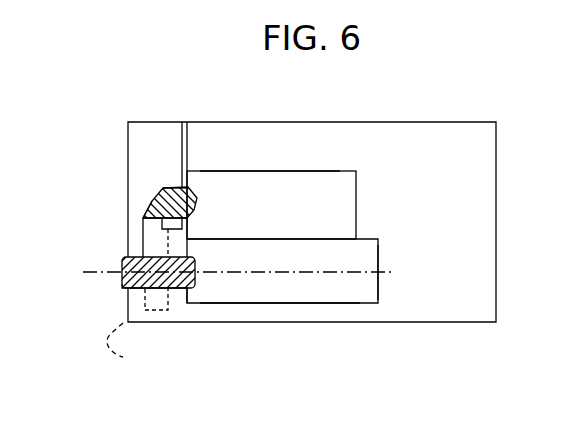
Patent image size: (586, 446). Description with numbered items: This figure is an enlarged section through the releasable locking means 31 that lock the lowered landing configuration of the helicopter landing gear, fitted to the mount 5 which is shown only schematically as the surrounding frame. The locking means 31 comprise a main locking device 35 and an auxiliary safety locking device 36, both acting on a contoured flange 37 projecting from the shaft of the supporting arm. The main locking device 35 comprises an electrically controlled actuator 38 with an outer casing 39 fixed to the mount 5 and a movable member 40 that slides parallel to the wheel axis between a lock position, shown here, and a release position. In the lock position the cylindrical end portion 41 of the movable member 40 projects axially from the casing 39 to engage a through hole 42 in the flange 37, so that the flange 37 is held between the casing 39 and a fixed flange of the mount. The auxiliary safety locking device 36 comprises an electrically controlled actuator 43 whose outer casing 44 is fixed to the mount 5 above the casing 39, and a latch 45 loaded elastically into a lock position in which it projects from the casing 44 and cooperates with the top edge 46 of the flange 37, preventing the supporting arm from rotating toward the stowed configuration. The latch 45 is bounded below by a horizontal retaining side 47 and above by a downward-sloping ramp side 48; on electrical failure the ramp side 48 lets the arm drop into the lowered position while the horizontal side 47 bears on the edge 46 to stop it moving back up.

The mount 5 is at (300, 233).
The releasable locking means 31 is at (346, 335).
The main locking device 35 is at (383, 297).
The auxiliary safety locking device 36 is at (376, 198).
The contoured flange 37 is at (130, 349).
The electrically controlled actuator 38 is at (261, 303).
The outer casing 39 is at (318, 295).
The movable member 40 is at (173, 289).
The cylindrical end portion 41 is at (122, 290).
The through hole 42 is at (152, 278).
The electrically controlled actuator 43 is at (250, 170).
The outer casing 44 is at (300, 177).
The latch 45 is at (176, 188).
The edge 46 is at (160, 227).
The horizontal retaining side 47 is at (150, 204).
The downward-sloping ramp side 48 is at (158, 188).